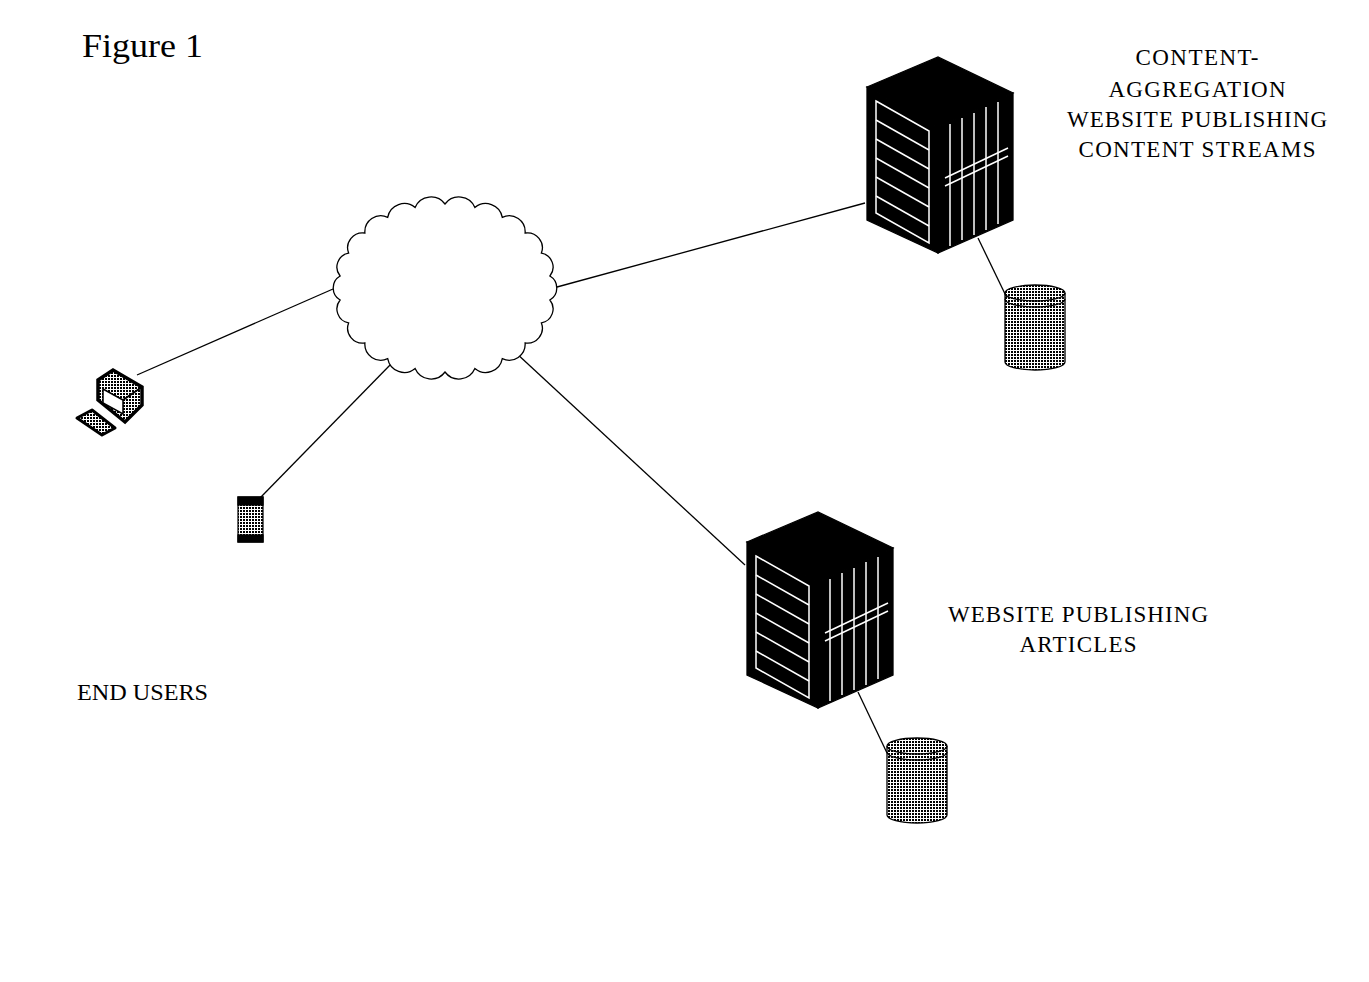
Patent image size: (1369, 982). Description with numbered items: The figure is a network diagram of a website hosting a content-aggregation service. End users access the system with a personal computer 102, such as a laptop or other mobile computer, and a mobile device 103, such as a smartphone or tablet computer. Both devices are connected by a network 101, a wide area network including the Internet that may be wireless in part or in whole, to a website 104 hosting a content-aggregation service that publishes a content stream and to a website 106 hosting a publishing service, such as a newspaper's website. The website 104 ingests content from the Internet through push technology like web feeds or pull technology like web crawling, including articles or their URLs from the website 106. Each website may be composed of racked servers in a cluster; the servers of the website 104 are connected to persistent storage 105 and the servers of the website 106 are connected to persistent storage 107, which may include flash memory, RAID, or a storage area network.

The network 101 is at (537, 240).
The personal computer 102 is at (125, 422).
The mobile device 103 is at (252, 542).
The website hosting a content-aggregation service 104 is at (900, 237).
The persistent storage 105 is at (1035, 370).
The website hosting a publishing service 106 is at (795, 697).
The persistent storage 107 is at (920, 822).